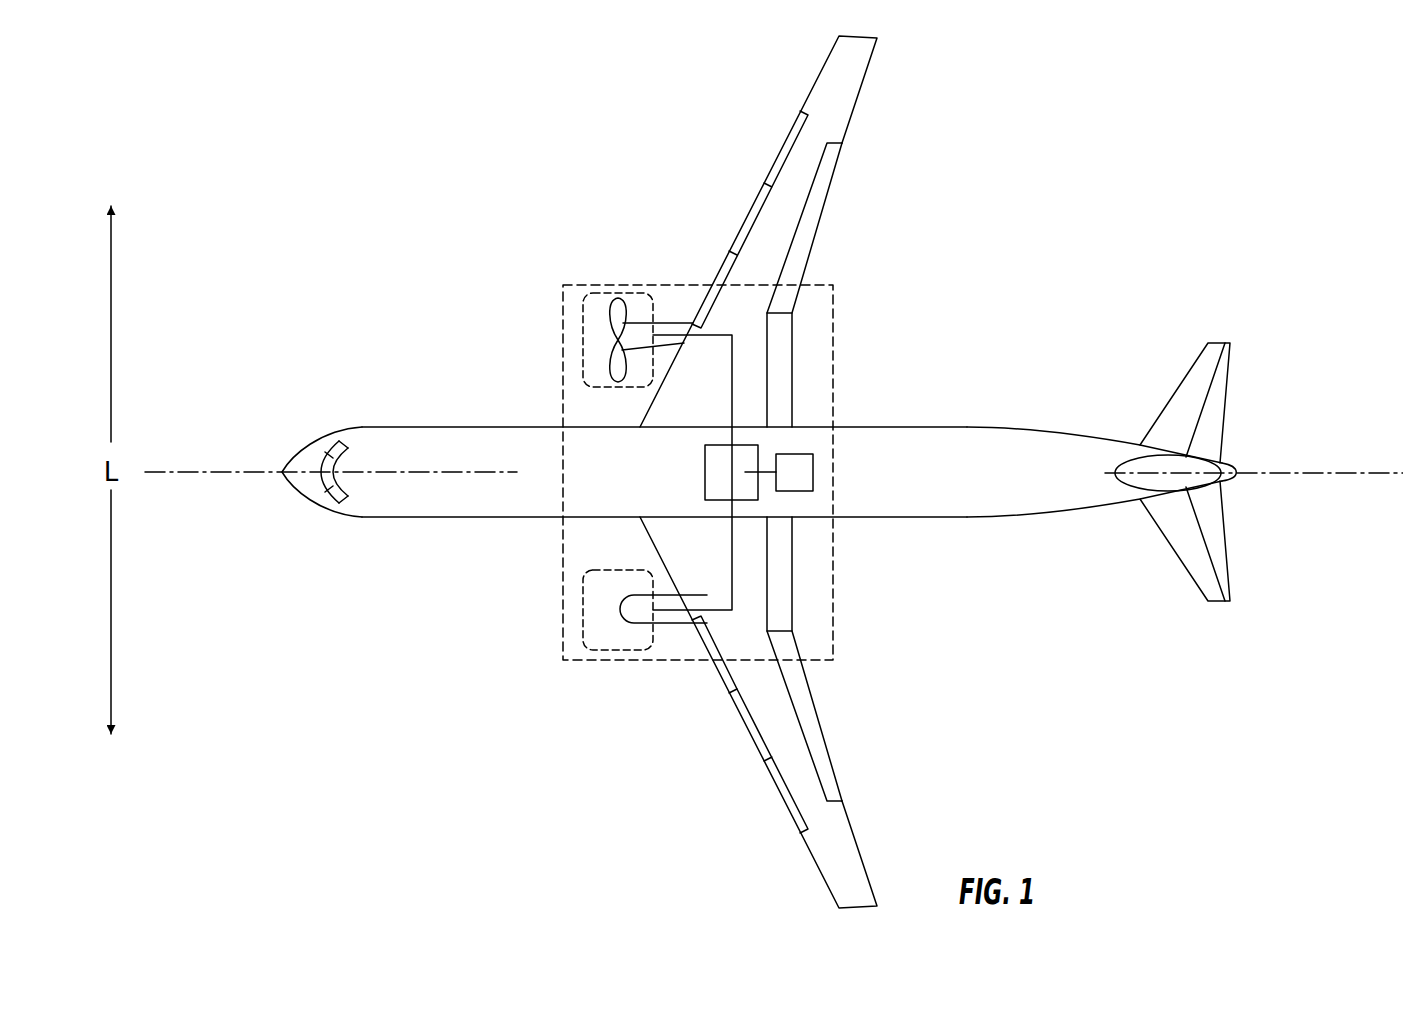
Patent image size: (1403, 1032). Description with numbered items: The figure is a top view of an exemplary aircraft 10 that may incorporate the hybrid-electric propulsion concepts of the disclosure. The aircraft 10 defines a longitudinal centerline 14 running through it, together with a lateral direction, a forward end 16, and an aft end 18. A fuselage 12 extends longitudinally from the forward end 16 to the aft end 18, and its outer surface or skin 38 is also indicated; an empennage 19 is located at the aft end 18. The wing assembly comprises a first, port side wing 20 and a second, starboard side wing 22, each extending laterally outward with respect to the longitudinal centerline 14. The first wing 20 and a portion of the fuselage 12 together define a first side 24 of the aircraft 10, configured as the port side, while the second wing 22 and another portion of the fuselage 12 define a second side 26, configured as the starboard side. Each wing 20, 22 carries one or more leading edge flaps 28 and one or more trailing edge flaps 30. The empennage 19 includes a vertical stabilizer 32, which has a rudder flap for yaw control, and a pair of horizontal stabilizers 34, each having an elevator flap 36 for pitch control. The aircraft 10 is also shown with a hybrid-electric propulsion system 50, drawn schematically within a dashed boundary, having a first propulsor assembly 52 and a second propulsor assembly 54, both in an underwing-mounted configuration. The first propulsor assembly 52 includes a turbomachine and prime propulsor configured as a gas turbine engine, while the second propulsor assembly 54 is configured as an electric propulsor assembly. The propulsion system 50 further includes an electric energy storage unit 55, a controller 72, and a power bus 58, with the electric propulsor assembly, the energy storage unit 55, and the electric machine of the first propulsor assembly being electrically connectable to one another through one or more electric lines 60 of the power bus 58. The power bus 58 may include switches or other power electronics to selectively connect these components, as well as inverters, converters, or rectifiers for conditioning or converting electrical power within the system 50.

The aircraft 10 is at (1013, 157).
The fuselage 12 is at (362, 500).
The longitudinal centerline 14 is at (208, 474).
The forward end 16 is at (272, 517).
The aft end 18 is at (1203, 480).
The empennage 19 is at (1280, 425).
The first wing 20 is at (800, 782).
The second wing 22 is at (794, 231).
The first side 24 is at (609, 677).
The second side 26 is at (579, 285).
The leading edge flap 28 is at (753, 730).
The trailing edge flap 30 is at (766, 712).
The vertical stabilizer 32 is at (1237, 484).
The horizontal stabilizer 34 is at (1190, 372).
The elevator flap 36 is at (1223, 388).
The outer surface or skin 38 is at (962, 478).
The hybrid-electric propulsion system 50 is at (833, 362).
The first propulsor assembly 52 is at (604, 626).
The second propulsor assembly 54 is at (686, 315).
The electric energy storage unit 55 is at (800, 472).
The power bus 58 is at (748, 357).
The electric line 60 is at (732, 383).
The controller 72 is at (705, 470).